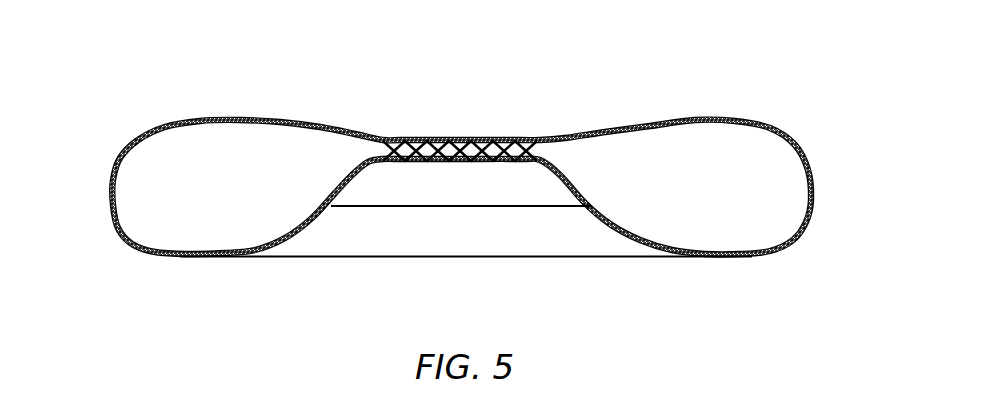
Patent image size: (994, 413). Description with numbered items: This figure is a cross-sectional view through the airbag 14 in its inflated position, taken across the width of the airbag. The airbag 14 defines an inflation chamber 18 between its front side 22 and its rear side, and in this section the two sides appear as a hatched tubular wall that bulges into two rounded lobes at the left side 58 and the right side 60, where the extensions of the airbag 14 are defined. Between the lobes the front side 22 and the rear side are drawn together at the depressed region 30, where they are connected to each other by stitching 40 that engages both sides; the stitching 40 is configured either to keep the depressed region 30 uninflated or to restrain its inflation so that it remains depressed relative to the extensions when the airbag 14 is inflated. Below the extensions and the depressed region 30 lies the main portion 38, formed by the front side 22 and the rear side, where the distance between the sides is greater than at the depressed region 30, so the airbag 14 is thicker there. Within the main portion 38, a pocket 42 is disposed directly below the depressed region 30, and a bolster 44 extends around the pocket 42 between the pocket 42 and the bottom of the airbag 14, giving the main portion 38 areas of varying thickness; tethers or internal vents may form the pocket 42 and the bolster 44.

The airbag 14 is at (460, 172).
The inflation chamber 18 is at (224, 146).
The front side 22 is at (355, 262).
The depressed region 30 is at (450, 138).
The main portion 38 is at (543, 259).
The stitching 40 is at (417, 148).
The pocket 42 is at (376, 190).
The bolster 44 is at (188, 258).
The left side 58 is at (101, 189).
The right side 60 is at (820, 188).